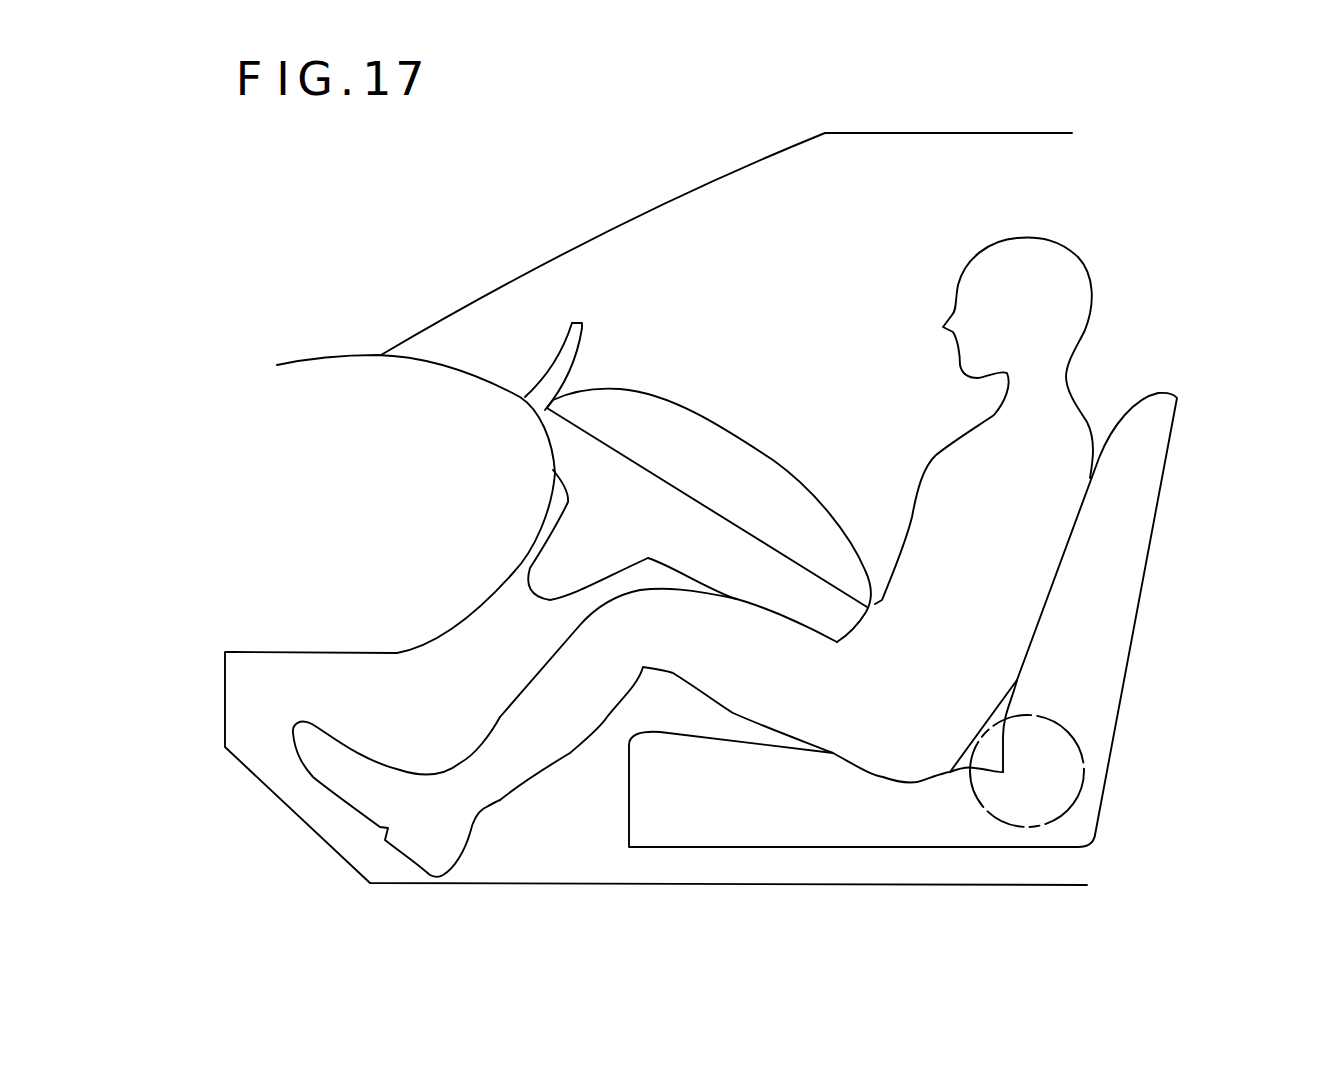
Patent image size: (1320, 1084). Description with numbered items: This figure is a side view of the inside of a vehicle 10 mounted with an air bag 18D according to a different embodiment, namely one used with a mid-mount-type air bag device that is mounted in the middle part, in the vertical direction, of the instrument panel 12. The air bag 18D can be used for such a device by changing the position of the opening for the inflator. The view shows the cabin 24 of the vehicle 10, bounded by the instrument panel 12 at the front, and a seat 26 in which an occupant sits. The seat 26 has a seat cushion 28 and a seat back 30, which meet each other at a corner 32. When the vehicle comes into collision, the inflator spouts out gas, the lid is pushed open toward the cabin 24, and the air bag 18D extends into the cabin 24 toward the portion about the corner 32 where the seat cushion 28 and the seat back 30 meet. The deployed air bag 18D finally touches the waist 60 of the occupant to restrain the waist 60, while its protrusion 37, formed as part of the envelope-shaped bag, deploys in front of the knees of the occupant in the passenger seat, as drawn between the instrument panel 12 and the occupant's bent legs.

The vehicle 10 is at (937, 122).
The instrument panel 12 is at (470, 368).
The air bag 18D is at (752, 447).
The cabin 24 is at (888, 253).
The seat 26 is at (734, 853).
The seat cushion 28 is at (838, 827).
The seat back 30 is at (1123, 597).
The corner 32 is at (1085, 753).
The protrusion 37 is at (543, 582).
The waist 60 is at (926, 703).